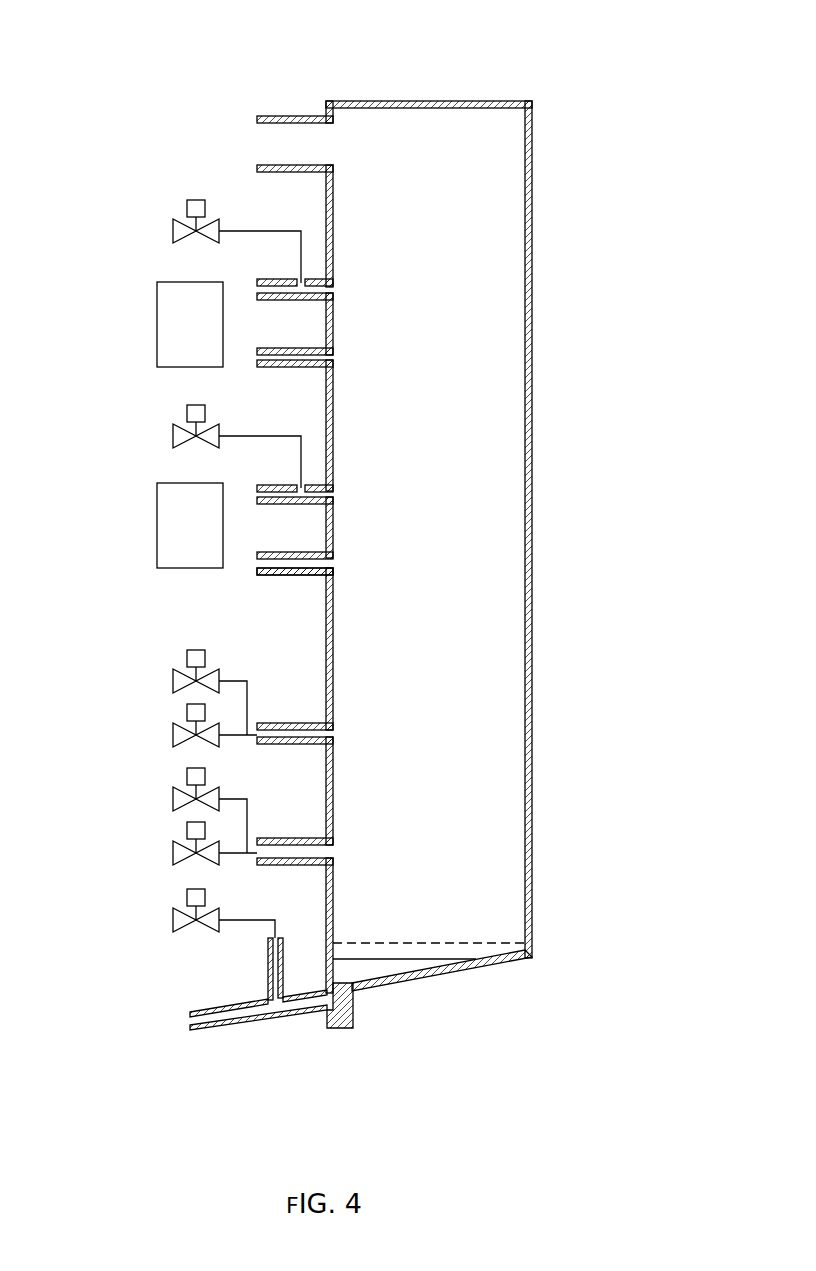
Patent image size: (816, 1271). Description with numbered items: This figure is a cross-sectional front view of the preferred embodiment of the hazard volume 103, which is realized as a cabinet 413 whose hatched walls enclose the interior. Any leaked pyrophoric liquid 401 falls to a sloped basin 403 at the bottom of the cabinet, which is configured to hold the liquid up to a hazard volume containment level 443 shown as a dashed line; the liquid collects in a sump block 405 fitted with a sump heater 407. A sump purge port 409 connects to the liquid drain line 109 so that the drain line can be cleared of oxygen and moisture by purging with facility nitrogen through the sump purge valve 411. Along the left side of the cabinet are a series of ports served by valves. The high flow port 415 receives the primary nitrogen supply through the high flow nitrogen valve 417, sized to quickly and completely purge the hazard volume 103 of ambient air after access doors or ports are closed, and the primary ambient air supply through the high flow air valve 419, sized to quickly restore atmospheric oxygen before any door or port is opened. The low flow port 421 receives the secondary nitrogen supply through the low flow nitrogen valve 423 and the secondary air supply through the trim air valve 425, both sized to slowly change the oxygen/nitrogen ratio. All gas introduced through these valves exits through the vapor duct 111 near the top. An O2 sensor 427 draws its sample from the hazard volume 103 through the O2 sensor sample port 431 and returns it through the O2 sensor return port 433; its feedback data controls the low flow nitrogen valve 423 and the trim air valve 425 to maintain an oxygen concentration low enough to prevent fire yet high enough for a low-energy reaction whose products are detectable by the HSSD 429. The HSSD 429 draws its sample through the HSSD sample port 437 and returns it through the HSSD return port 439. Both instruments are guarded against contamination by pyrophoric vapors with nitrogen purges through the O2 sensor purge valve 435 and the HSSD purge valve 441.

The hazard volume 103 is at (148, 45).
The liquid drain line 109 is at (208, 1028).
The vapor duct 111 is at (276, 116).
The leaked pyrophoric liquid 401 is at (430, 958).
The sloped basin 403 is at (460, 972).
The sump block 405 is at (355, 990).
The sump heater 407 is at (332, 1028).
The sump purge port 409 is at (268, 966).
The sump purge valve 411 is at (186, 890).
The cabinet 413 is at (480, 101).
The high flow port 415 is at (310, 836).
The high flow nitrogen valve 417 is at (186, 775).
The high flow air valve 419 is at (186, 832).
The low flow port 421 is at (310, 708).
The low flow nitrogen valve 423 is at (188, 666).
The trim air valve 425 is at (186, 712).
The O2 sensor 427 is at (190, 525).
The HSSD 429 is at (190, 324).
The O2 sensor sample port 431 is at (288, 485).
The O2 sensor return port 433 is at (292, 575).
The O2 sensor purge valve 435 is at (188, 420).
The HSSD sample port 437 is at (288, 279).
The HSSD return port 439 is at (314, 368).
The HSSD purge valve 441 is at (188, 212).
The hazard volume containment level 443 is at (532, 958).